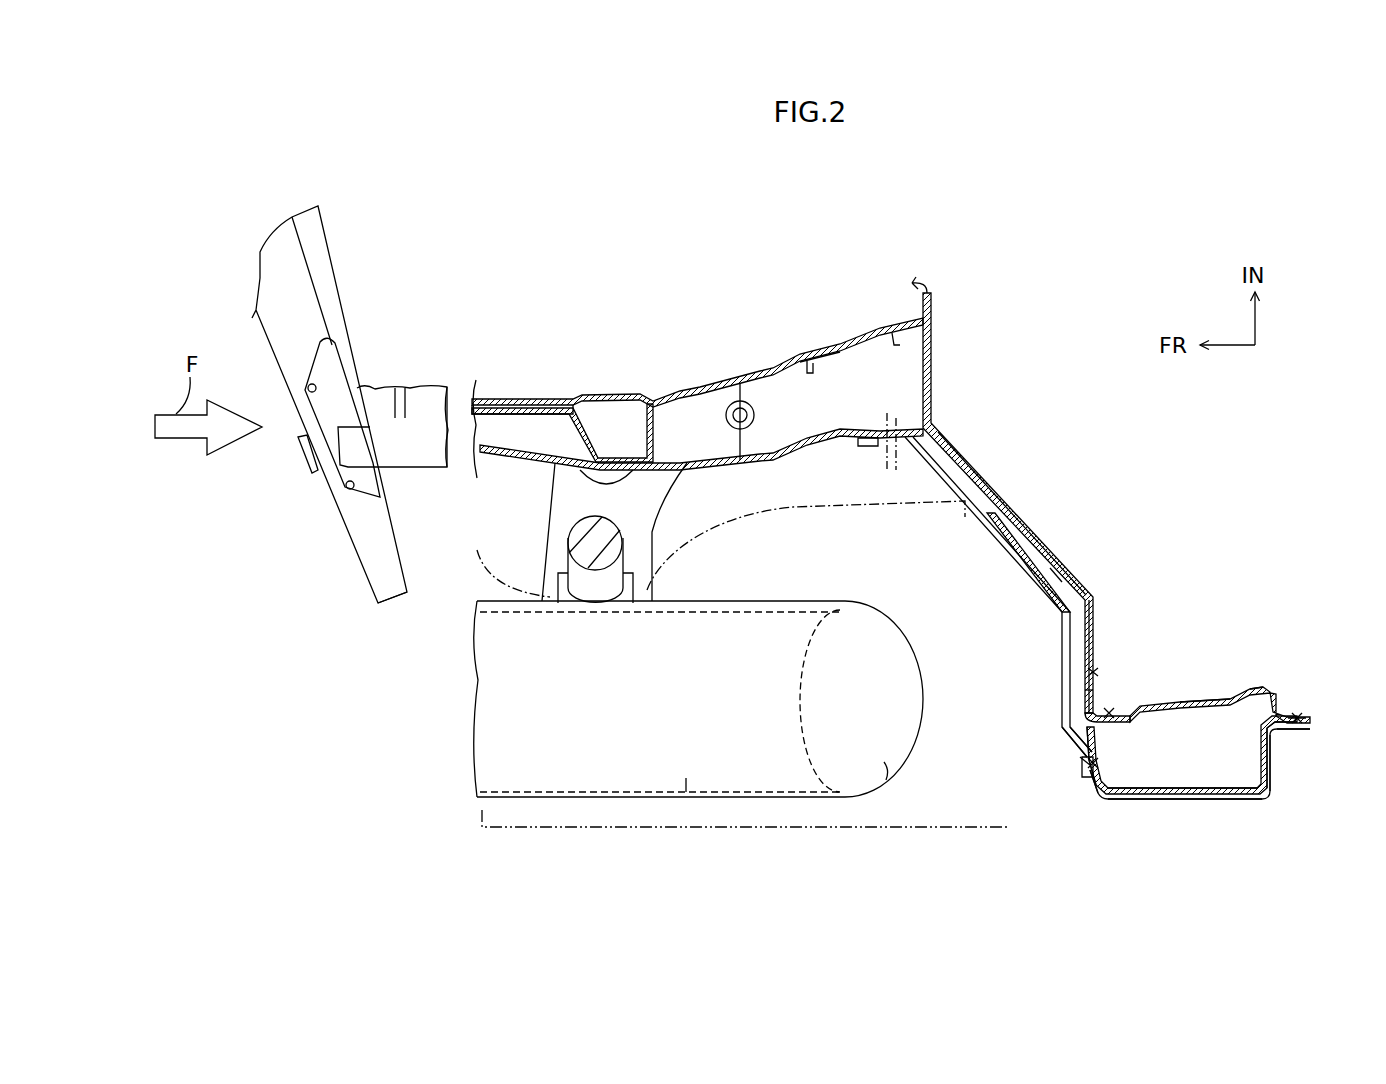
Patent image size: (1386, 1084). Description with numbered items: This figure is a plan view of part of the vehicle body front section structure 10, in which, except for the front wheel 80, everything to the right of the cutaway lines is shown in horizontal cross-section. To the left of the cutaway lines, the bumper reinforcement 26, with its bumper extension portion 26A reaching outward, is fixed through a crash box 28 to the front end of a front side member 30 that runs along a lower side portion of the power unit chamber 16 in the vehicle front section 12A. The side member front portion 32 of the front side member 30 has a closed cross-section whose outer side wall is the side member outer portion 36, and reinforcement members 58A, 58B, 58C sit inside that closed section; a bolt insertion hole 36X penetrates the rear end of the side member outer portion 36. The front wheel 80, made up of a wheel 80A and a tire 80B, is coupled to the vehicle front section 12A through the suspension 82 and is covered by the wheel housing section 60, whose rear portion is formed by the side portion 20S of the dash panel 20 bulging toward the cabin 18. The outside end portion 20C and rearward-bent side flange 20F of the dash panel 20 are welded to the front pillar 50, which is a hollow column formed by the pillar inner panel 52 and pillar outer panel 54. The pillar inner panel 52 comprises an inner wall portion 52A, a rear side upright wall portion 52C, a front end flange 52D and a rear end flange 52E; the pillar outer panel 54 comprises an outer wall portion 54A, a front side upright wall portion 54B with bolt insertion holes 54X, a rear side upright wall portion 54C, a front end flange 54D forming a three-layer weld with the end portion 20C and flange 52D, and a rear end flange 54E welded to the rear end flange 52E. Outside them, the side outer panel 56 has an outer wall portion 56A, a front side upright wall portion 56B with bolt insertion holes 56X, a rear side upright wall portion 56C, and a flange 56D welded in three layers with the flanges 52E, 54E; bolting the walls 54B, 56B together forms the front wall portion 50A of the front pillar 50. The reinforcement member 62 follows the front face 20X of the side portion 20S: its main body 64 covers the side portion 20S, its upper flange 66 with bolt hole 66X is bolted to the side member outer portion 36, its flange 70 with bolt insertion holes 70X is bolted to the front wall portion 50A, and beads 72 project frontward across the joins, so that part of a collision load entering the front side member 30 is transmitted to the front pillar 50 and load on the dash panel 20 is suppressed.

The vehicle body front section structure 10 is at (752, 232).
The vehicle front section 12A is at (688, 272).
The power unit chamber 16 is at (755, 332).
The cabin 18 is at (1145, 467).
The dash panel 20 is at (945, 388).
The side portion 20S is at (1052, 547).
The front face 20X is at (1062, 575).
The vehicle body width direction outside end portion 20C is at (1097, 637).
The side flange 20F is at (1107, 712).
The bumper reinforcement 26 is at (352, 280).
The bumper extension portion 26A is at (393, 528).
The crash box 28 is at (400, 372).
The front side member 30 is at (658, 352).
The side member front portion 32 is at (548, 395).
The side member outer portion 36 is at (752, 475).
The bolt insertion hole 36X is at (887, 417).
The front pillar 50 is at (1200, 633).
The front wall portion 50A is at (1040, 768).
The pillar inner panel 52 is at (1230, 684).
The inner wall portion 52A is at (1222, 690).
The rear side upright wall portion 52C is at (1268, 686).
The front end flange 52D is at (1103, 672).
The rear end flange 52E is at (1302, 712).
The pillar outer panel 54 is at (1180, 775).
The outer wall portion 54A is at (1205, 788).
The front side upright wall portion 54B is at (1118, 795).
The rear side upright wall portion 54C is at (1255, 768).
The front end flange 54D is at (1088, 694).
The rear end flange 54E is at (1285, 716).
The bolt insertion hole 54X is at (1105, 762).
The side outer panel 56 is at (1275, 805).
The outer wall portion 56A is at (1215, 801).
The front side upright wall portion 56B is at (1093, 780).
The rear side upright wall portion 56C is at (1272, 780).
The flange 56D is at (1300, 724).
The bolt insertion hole 56X is at (1083, 770).
The reinforcement member 58A is at (657, 430).
The reinforcement member 58B is at (747, 390).
The reinforcement member 58C is at (836, 356).
The wheel housing section 60 is at (625, 827).
The reinforcement member 62 is at (972, 530).
The main body 64 is at (1012, 553).
The upper flange 66 is at (868, 446).
The bolt hole 66X is at (897, 447).
The flange 70 is at (1070, 733).
The bolt insertion hole 70X is at (1082, 760).
The bead 72 is at (1030, 580).
The front wheel 80 is at (730, 802).
The wheel 80A is at (686, 778).
The tire 80B is at (886, 765).
The suspension 82 is at (665, 542).